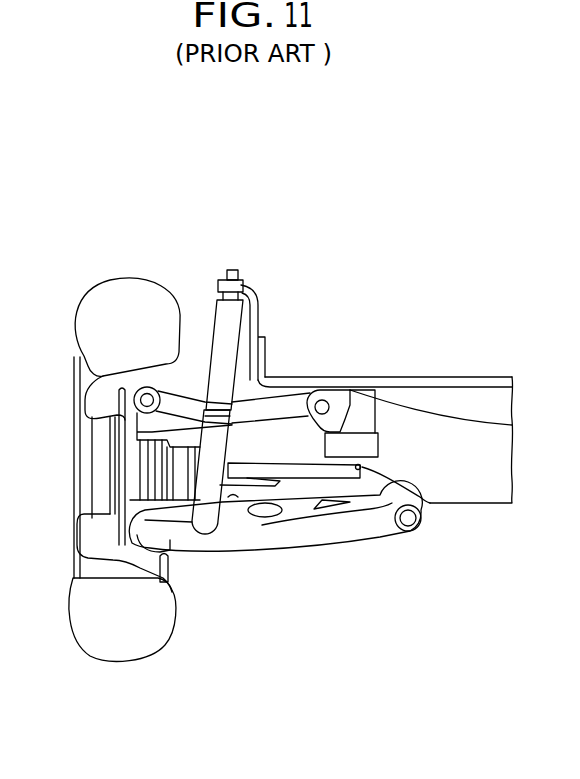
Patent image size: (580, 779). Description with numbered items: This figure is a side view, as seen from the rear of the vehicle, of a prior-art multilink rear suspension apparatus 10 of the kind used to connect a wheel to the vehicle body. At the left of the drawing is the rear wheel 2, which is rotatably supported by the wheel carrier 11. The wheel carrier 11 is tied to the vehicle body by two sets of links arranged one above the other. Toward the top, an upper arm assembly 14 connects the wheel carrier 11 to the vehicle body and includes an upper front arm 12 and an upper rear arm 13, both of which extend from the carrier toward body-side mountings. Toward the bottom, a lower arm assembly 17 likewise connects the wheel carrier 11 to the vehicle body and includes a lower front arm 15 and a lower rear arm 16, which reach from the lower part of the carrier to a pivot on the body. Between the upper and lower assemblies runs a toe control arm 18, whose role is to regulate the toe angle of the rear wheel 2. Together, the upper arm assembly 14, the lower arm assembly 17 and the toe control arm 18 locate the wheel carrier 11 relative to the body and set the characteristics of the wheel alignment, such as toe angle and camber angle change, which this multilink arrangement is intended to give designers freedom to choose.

The rear wheel 2 is at (83, 298).
The rear suspension apparatus 10 is at (323, 342).
The wheel carrier 11 is at (128, 468).
The upper front arm 12 is at (191, 426).
The upper rear arm 13 is at (278, 406).
The upper arm assembly 14 is at (295, 227).
The lower front arm 15 is at (176, 554).
The lower rear arm 16 is at (253, 545).
The lower arm assembly 17 is at (269, 606).
The toe control arm 18 is at (258, 482).